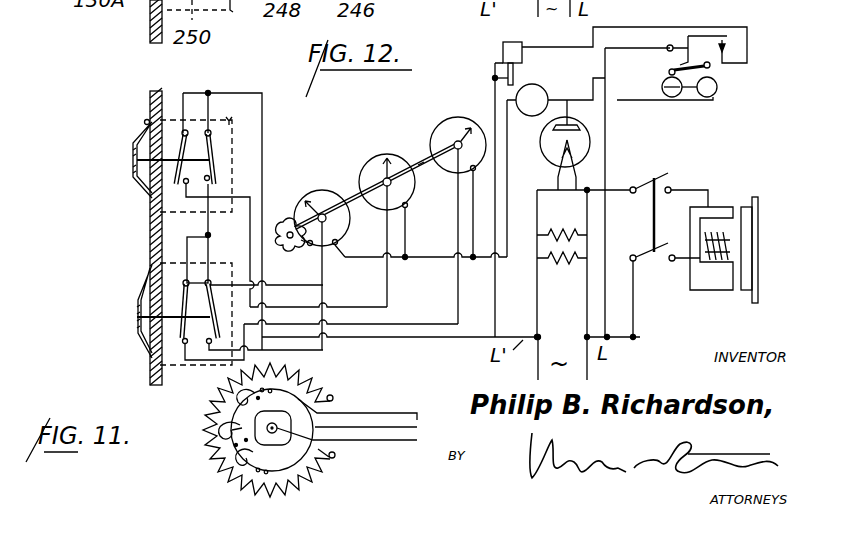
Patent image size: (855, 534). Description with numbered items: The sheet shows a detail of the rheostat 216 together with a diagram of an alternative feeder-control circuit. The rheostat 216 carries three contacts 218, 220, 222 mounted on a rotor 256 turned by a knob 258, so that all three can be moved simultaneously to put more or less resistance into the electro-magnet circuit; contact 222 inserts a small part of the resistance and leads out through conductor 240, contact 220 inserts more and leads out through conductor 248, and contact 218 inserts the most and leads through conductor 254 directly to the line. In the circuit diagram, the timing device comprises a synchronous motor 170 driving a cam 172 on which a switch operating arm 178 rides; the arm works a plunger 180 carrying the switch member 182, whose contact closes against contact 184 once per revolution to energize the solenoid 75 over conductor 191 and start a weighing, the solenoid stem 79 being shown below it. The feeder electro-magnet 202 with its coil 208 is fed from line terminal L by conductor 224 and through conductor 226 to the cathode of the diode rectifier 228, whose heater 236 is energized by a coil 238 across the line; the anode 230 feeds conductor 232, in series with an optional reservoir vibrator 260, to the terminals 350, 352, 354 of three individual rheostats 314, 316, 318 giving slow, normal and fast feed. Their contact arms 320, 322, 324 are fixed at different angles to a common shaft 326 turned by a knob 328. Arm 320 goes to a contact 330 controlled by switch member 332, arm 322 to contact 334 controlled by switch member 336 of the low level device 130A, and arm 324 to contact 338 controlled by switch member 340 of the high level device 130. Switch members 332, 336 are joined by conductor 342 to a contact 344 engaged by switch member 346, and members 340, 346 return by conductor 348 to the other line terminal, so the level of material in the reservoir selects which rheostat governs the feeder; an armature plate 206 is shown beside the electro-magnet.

In FIG. 12, the solenoid 75 is at (503, 55).
In FIG. 12, the thermostat stem contact 79 is at (514, 80).
In FIG. 12, the high level device 130 is at (122, 172).
In FIG. 12, the low level device 130A is at (140, 290).
In FIG. 12, the synchronous electric motor 170 is at (718, 88).
In FIG. 12, the cam 172 is at (662, 85).
In FIG. 12, the switch operating arm 178 is at (711, 67).
In FIG. 12, the plunger 180 is at (686, 61).
In FIG. 12, the switch member 182 is at (698, 33).
In FIG. 12, the contact 184 is at (724, 42).
In FIG. 12, the conductor 191 is at (612, 28).
In FIG. 12, the electro-magnet 202 is at (692, 276).
In FIG. 12, the armature plate 206 is at (745, 268).
In FIG. 12, the coil 208 is at (722, 230).
In FIG. 11, the rheostat 216 is at (331, 378).
In FIG. 11, the rheostat contact 218 is at (232, 468).
In FIG. 11, the rheostat contact 220 is at (218, 447).
In FIG. 11, the rheostat contact 222 is at (230, 393).
In FIG. 12, the conductor 224 is at (640, 337).
In FIG. 12, the conductor 226 is at (616, 190).
In FIG. 12, the diode rectifier 228 is at (588, 140).
In FIG. 12, the anode 230 is at (582, 118).
In FIG. 12, the conductor 232 is at (509, 248).
In FIG. 12, the heater 236 is at (562, 231).
In FIG. 12, the coil 238 is at (567, 268).
In FIG. 11, the conductor 240 is at (385, 413).
In FIG. 11, the conductor 248 is at (417, 427).
In FIG. 11, the conductor 254 is at (380, 441).
In FIG. 11, the rotor 256 is at (225, 412).
In FIG. 11, the knob 258 is at (333, 460).
In FIG. 12, the vibrator 260 is at (548, 100).
In FIG. 12, the rheostat 314 is at (293, 208).
In FIG. 12, the rheostat 316 is at (408, 146).
In FIG. 12, the rheostat 318 is at (454, 118).
In FIG. 12, the contact arm 320 is at (306, 200).
In FIG. 12, the contact arm 322 is at (374, 158).
In FIG. 12, the contact arm 324 is at (447, 127).
In FIG. 12, the shaft 326 is at (423, 166).
In FIG. 12, the knob 328 is at (292, 248).
In FIG. 12, the contact 330 is at (206, 340).
In FIG. 12, the switch member 332 is at (227, 260).
In FIG. 12, the contact 334 is at (183, 339).
In FIG. 12, the switch member 336 is at (180, 297).
In FIG. 12, the contact 338 is at (152, 197).
In FIG. 12, the switch member 340 is at (150, 128).
In FIG. 12, the conductor 342 is at (208, 224).
In FIG. 12, the contact 344 is at (210, 177).
In FIG. 12, the switch member 346 is at (214, 152).
In FIG. 12, the conductor 348 is at (263, 124).
In FIG. 12, the rheostat terminal 350 is at (476, 168).
In FIG. 12, the rheostat terminal 352 is at (408, 208).
In FIG. 12, the rheostat terminal 354 is at (338, 258).